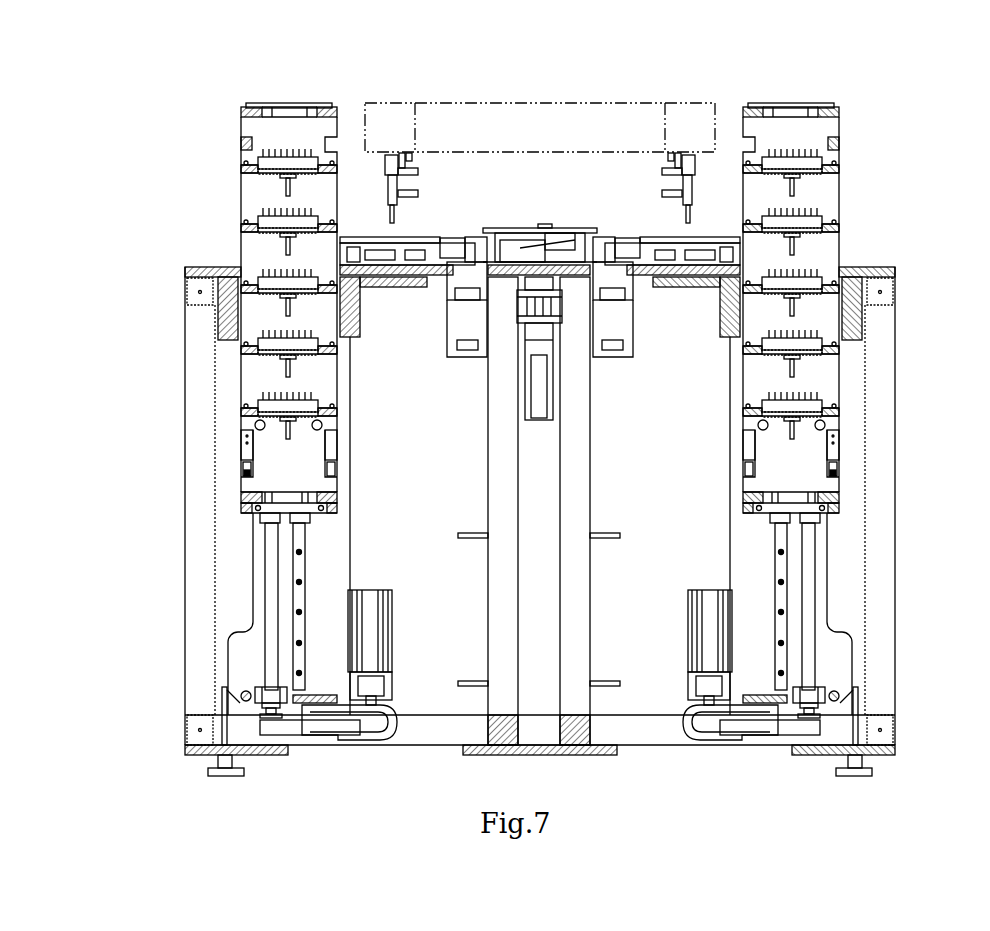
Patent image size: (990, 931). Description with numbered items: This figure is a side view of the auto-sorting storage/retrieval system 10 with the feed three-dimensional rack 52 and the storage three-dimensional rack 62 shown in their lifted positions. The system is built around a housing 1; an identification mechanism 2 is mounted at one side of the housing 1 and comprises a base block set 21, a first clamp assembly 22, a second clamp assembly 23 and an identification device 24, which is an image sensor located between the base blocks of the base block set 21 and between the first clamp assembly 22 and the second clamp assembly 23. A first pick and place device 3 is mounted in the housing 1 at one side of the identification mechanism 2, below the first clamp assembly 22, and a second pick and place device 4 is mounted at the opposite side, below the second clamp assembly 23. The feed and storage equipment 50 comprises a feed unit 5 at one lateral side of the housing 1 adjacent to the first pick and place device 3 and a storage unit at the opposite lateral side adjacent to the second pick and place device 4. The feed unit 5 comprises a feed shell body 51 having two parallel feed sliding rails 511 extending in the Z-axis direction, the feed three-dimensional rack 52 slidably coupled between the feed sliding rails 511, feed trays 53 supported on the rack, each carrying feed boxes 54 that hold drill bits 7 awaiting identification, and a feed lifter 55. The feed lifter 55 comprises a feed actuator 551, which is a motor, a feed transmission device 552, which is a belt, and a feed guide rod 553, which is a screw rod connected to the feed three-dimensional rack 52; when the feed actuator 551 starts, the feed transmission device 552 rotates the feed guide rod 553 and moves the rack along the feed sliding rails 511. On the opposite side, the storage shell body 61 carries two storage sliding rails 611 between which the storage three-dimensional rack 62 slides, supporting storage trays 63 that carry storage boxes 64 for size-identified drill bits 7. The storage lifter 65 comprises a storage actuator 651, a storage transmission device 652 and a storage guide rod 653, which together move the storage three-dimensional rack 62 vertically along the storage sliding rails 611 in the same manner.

The housing 1 is at (897, 472).
The auto-sorting storage/retrieval system 10 is at (897, 413).
The identification mechanism 2 is at (509, 87).
The base block set 21 is at (545, 100).
The first clamp assembly 22 is at (393, 157).
The second clamp assembly 23 is at (688, 157).
The identification device 24 is at (541, 231).
The first pick and place device 3 is at (402, 244).
The second pick and place device 4 is at (668, 243).
The feed unit 5 is at (240, 556).
The feed and storage equipment 50 is at (240, 449).
The feed shell body 51 is at (253, 650).
The feed sliding rails 511 is at (298, 630).
The feed three-dimensional rack 52 is at (245, 196).
The feed trays 53 is at (244, 234).
The feed boxes 54 is at (288, 212).
The feed lifter 55 is at (366, 613).
The feed actuator 551 is at (372, 648).
The feed transmission device 552 is at (310, 738).
The feed guide rod 553 is at (273, 680).
The storage shell body 61 is at (820, 568).
The storage sliding rails 611 is at (780, 628).
The storage three-dimensional rack 62 is at (828, 212).
The storage trays 63 is at (838, 232).
The storage boxes 64 is at (793, 218).
The storage lifter 65 is at (707, 601).
The storage actuator 651 is at (710, 643).
The storage transmission device 652 is at (770, 738).
The storage guide rod 653 is at (808, 655).
The drill bits 7 is at (290, 147).